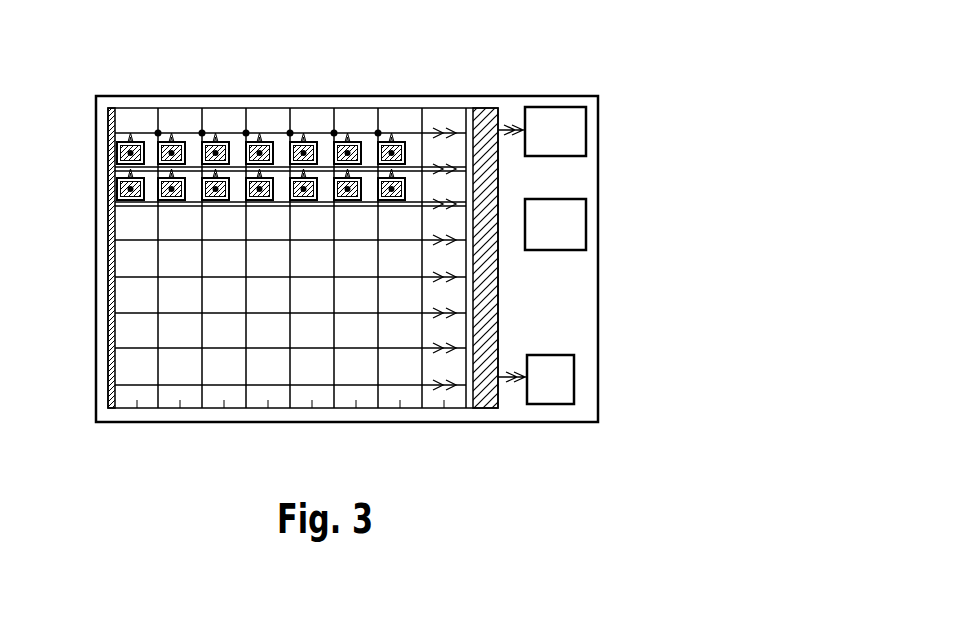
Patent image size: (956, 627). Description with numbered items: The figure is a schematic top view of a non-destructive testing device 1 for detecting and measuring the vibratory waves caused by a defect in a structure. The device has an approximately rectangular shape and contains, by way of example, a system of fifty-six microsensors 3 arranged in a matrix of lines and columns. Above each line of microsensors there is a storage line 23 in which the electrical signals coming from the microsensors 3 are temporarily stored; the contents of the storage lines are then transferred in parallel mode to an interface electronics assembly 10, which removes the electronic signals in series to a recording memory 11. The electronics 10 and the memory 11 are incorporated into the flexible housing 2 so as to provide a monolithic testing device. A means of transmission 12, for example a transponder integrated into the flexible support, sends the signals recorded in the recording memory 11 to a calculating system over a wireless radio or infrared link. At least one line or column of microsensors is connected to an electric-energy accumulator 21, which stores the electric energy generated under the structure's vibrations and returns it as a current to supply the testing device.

The non-destructive testing device 1 is at (85, 290).
The flexible housing 2 is at (381, 96).
The microsensors 3 is at (135, 200).
The interface electronics assembly 10 is at (487, 108).
The recording memory 11 is at (586, 128).
The means of transmission 12 is at (586, 222).
The electric-energy accumulator 21 is at (574, 368).
The storage line 23 is at (192, 133).